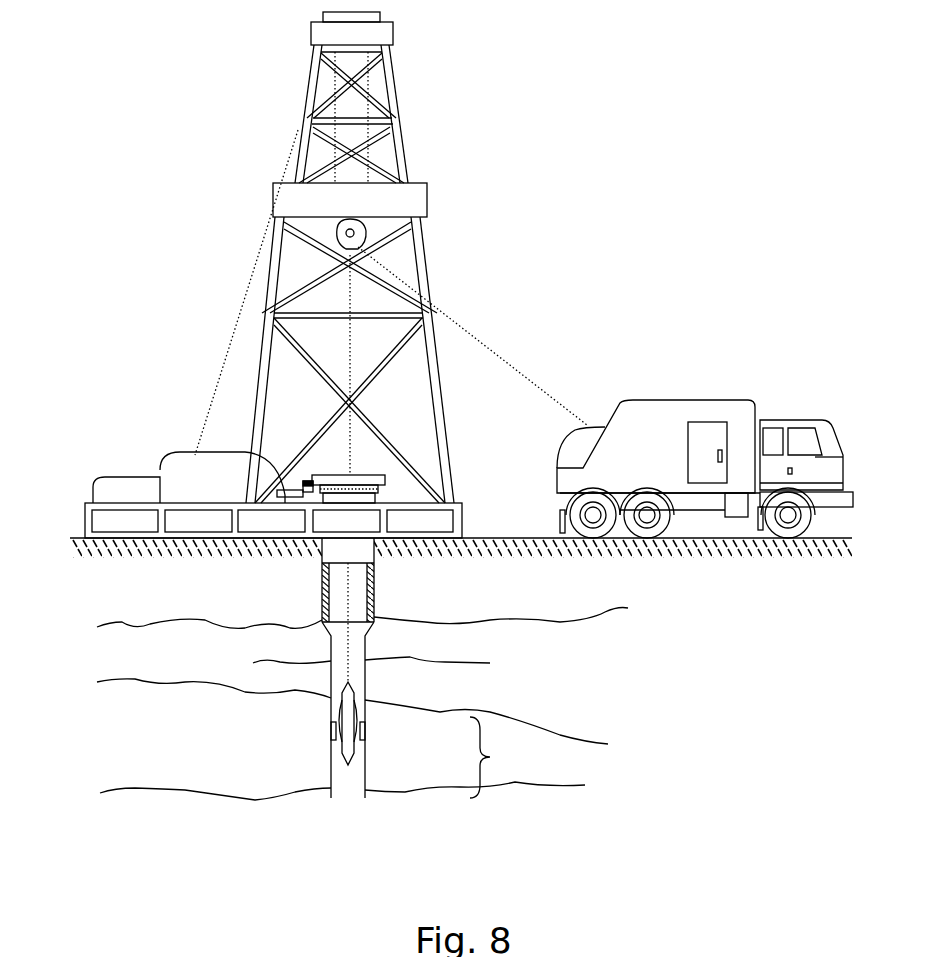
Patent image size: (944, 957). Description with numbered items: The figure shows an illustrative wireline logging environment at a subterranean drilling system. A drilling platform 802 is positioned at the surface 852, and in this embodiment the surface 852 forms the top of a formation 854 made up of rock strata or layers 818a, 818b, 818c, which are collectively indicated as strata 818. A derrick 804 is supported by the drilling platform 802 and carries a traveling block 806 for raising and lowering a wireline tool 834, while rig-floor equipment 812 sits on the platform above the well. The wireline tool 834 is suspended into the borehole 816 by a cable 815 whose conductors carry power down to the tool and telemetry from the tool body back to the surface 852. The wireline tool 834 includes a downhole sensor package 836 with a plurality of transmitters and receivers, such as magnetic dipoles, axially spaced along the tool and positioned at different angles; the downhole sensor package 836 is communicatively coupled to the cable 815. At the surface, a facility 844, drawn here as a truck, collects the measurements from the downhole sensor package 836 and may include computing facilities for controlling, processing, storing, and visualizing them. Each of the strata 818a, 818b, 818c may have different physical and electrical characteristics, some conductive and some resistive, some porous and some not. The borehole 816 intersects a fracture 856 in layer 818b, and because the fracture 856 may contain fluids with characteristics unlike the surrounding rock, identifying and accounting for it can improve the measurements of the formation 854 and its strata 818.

The drilling platform 802 is at (460, 522).
The derrick 804 is at (440, 378).
The traveling block 806 is at (365, 232).
The rig floor equipment 812 is at (383, 472).
The cable 815 is at (345, 596).
The borehole 816 is at (347, 656).
The rock strata or layers 818 is at (486, 749).
The rock layer 818a is at (580, 597).
The rock layer 818b is at (158, 668).
The rock layer 818c is at (158, 771).
The wireline tool 834 is at (345, 702).
The downhole sensor package 836 is at (338, 726).
The logging facility 844 is at (685, 400).
The surface 852 is at (75, 538).
The formation 854 is at (760, 652).
The fracture 856 is at (445, 662).